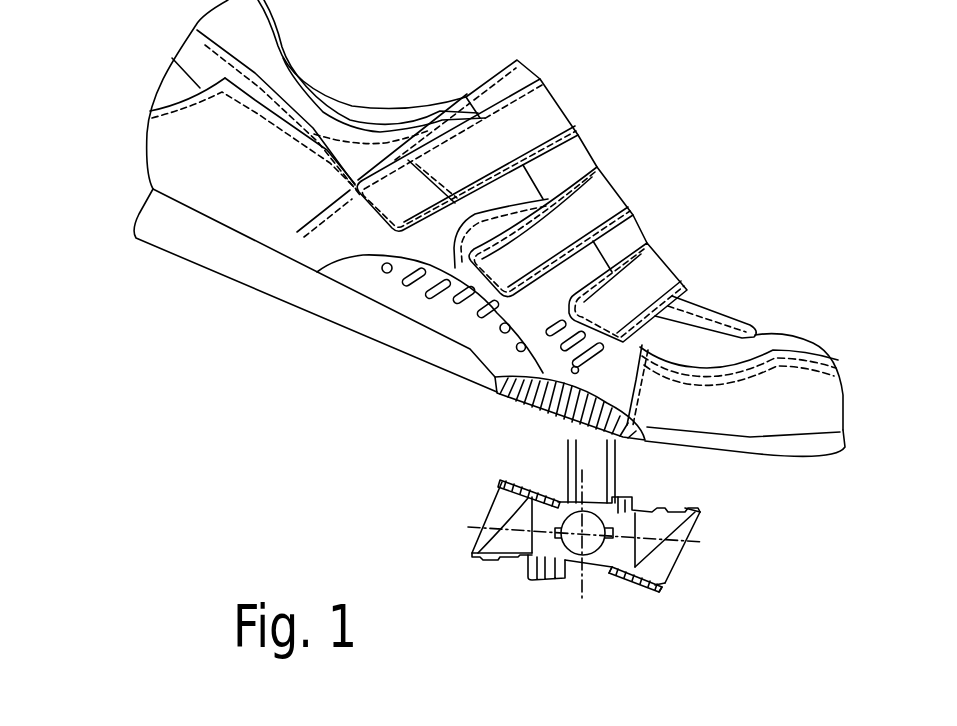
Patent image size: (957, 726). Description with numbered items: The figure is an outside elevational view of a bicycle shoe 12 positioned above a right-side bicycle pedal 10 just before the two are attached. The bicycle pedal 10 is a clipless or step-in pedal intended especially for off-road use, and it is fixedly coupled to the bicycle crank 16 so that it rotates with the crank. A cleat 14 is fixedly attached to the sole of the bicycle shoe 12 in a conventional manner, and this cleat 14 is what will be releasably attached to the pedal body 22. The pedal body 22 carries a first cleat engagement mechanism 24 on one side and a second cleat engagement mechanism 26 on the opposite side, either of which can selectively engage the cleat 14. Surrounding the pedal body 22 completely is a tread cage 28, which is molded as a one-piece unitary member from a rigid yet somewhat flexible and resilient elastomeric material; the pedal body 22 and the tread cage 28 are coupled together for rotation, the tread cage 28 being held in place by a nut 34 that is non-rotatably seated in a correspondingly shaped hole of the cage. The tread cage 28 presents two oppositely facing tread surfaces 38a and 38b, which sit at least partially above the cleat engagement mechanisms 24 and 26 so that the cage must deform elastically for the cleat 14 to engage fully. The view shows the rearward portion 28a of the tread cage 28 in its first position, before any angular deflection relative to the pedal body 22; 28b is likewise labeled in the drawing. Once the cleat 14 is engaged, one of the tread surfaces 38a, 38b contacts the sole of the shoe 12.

The bicycle pedal 10 is at (570, 556).
The bicycle shoe 12 is at (720, 295).
The cleat 14 is at (538, 425).
The bicycle crank 16 is at (618, 476).
The pedal body 22 is at (515, 571).
The first cleat engagement mechanism 24 is at (592, 492).
The second cleat engagement mechanism 26 is at (603, 590).
The tread cage 28 is at (683, 543).
The rearward portion of the tread cage 28a is at (500, 479).
The second cage plate edge 28b is at (635, 579).
The nut 34 is at (575, 550).
The first tread surface 38a is at (699, 512).
The second tread surface 38b is at (660, 591).